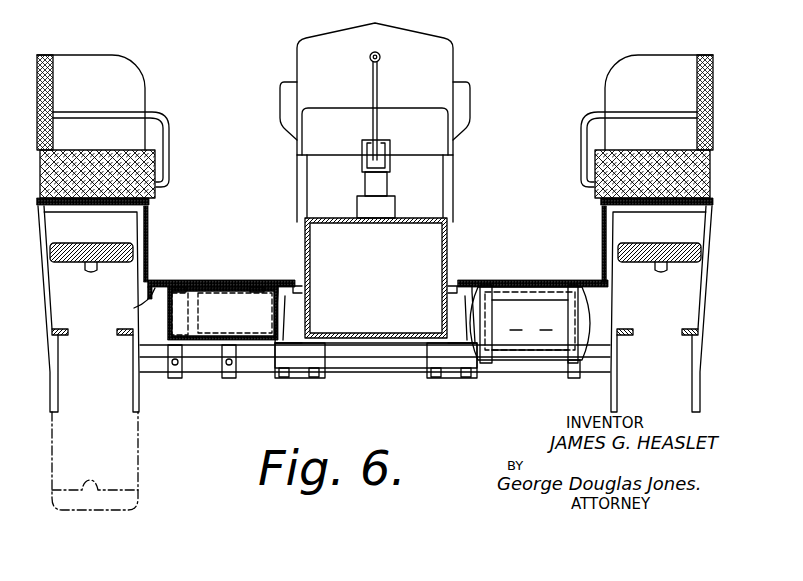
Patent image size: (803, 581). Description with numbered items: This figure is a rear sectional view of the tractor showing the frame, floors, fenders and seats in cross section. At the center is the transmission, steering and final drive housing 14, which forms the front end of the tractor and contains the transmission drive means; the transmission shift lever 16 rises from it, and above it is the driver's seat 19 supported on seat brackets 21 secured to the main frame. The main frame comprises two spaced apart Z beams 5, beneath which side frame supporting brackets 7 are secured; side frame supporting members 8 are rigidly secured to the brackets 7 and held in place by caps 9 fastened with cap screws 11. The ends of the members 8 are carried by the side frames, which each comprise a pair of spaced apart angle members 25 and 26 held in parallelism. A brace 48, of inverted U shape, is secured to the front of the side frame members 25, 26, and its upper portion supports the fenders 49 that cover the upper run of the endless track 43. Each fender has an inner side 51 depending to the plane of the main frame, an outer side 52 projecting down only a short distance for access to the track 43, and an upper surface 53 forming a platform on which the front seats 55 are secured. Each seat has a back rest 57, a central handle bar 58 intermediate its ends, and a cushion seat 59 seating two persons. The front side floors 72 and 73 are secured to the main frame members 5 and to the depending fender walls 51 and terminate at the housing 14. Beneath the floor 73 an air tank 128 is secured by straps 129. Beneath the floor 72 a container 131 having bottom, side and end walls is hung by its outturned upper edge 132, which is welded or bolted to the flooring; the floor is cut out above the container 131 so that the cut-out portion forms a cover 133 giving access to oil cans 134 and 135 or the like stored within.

The Z beam 5 is at (312, 300).
The side frame supporting bracket 7 is at (300, 326).
The side frame supporting member 8 is at (391, 371).
The cap 9 is at (325, 380).
The cap screw 11 is at (290, 379).
The transmission, steering and final drive housing 14 is at (376, 278).
The transmission shift lever 16 is at (380, 92).
The driver's seat 19 is at (422, 46).
The seat bracket 21 is at (297, 186).
The inner side frame member 25 is at (130, 368).
The outer side frame angle member 26 is at (58, 366).
The endless track 43 is at (95, 250).
The fender carrying brace 48 is at (135, 295).
The fender 49 is at (68, 207).
The inner side of fender 51 is at (149, 247).
The outer side of fender 52 is at (713, 206).
The upper surface of fender 53 is at (607, 212).
The front seat 55 is at (109, 69).
The back rest 57 is at (37, 104).
The central handle bar 58 is at (108, 120).
The cushion seat 59 is at (66, 155).
The front side floor 72 is at (162, 286).
The front side floor 73 is at (528, 283).
The air tank 128 is at (530, 324).
The strap 129 is at (572, 380).
The container 131 is at (210, 330).
The outturned upper edge 132 is at (150, 296).
The cover 133 is at (226, 280).
The oil can 134 is at (186, 330).
The oil can 135 is at (235, 313).